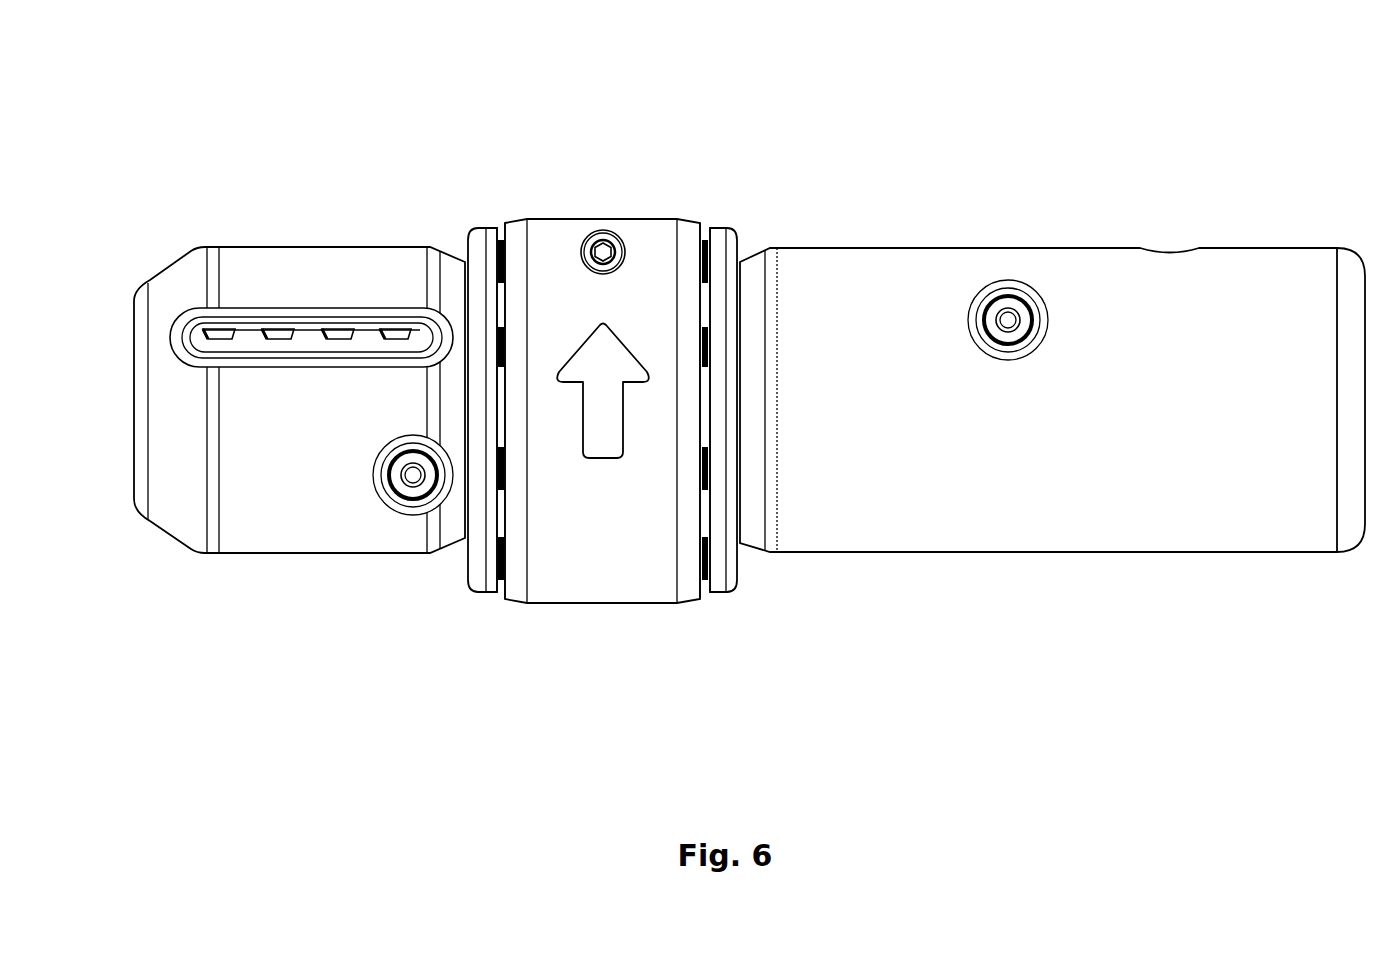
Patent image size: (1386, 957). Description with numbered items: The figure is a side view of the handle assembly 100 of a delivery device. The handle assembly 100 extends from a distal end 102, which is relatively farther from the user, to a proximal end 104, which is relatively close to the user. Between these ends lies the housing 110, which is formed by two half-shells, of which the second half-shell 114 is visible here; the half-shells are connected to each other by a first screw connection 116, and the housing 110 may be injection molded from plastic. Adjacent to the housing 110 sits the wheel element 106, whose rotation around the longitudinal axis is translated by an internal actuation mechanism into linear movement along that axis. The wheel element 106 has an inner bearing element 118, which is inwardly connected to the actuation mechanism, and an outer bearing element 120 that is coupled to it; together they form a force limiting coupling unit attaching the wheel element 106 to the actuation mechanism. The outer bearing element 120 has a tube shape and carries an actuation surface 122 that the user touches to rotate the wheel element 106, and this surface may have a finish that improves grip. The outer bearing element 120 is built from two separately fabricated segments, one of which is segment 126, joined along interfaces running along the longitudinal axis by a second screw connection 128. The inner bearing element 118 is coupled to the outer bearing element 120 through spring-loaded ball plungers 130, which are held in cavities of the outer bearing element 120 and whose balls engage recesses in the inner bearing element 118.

The handle assembly 100 is at (276, 94).
The distal end 102 is at (176, 246).
The proximal end 104 is at (1346, 242).
The wheel element 106 is at (670, 590).
The housing 110 is at (913, 542).
The second half-shell 114 is at (1278, 527).
The first screw connection 116 is at (1011, 303).
The inner bearing element 118 is at (475, 573).
The outer bearing element 120 is at (562, 217).
The actuation surface 122 is at (659, 567).
The segment 126 is at (563, 590).
The second screw connection 128 is at (605, 240).
The spring-loaded ball plungers 130 is at (709, 240).